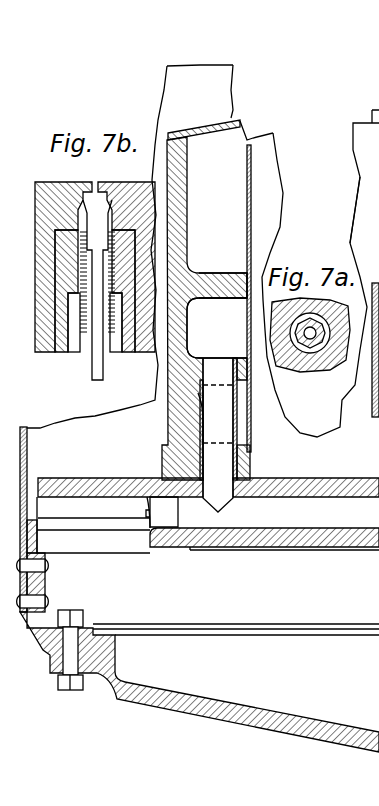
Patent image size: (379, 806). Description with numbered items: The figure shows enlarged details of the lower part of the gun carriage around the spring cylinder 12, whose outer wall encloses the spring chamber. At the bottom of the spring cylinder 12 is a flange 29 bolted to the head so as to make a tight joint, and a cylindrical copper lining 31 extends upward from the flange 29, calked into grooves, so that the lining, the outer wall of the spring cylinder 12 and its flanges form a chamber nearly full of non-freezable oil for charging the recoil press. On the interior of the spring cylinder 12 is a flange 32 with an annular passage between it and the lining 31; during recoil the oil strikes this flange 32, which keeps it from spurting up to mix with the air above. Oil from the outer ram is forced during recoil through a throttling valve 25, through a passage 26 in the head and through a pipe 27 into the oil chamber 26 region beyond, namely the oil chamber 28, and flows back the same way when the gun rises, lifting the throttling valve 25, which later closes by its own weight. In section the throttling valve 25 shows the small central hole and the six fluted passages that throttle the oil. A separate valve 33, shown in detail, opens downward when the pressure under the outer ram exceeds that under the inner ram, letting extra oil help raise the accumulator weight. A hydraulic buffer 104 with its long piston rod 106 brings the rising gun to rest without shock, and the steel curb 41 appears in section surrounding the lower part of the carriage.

In FIG. 7A, the spring cylinder 12 is at (189, 177).
In FIG. 7A, the cylindrical copper lining 31 is at (252, 208).
In FIG. 7A, the flange 32 is at (204, 272).
In FIG. 7A, the oil chamber 28 is at (217, 328).
In FIG. 7A, the pipe 27 is at (238, 418).
In FIG. 7A, the flange 29 is at (251, 464).
In FIG. 7A, the passage 26 is at (262, 523).
In FIG. 7A, the steel curb 41 is at (28, 448).
In FIG. 7A, the throttling valve 25 is at (313, 360).
In FIG. 7A, the hydraulic buffer 104 is at (372, 384).
In FIG. 7A, the piston rod 106 is at (364, 217).
In FIG. 7B, the valve 33 is at (97, 290).